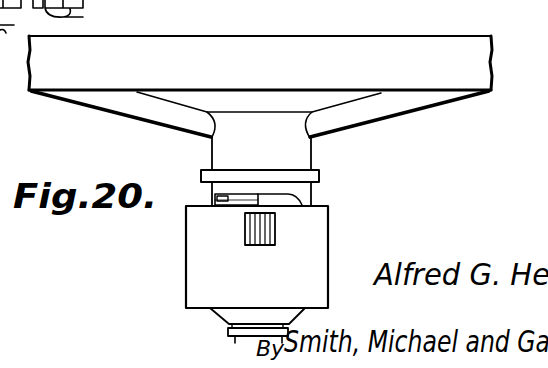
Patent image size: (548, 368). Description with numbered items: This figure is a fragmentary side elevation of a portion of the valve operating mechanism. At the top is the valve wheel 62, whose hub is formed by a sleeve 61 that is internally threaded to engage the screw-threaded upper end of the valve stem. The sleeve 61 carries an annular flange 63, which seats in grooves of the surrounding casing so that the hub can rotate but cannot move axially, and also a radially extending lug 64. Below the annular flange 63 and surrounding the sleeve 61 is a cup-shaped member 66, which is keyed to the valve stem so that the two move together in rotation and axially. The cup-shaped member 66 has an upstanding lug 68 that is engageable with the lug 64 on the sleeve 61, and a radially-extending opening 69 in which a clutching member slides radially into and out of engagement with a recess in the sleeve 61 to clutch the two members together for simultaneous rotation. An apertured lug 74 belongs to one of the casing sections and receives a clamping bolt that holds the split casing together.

The sleeve 61 is at (286, 152).
The valve wheel 62 is at (371, 112).
The annular flange 63 is at (317, 176).
The radially extending lug 64 is at (212, 198).
The cup-shaped member 66 is at (317, 251).
The upstanding lug 68 is at (283, 199).
The radially-extending opening 69 is at (256, 232).
The apertured lug 74 is at (45, 16).